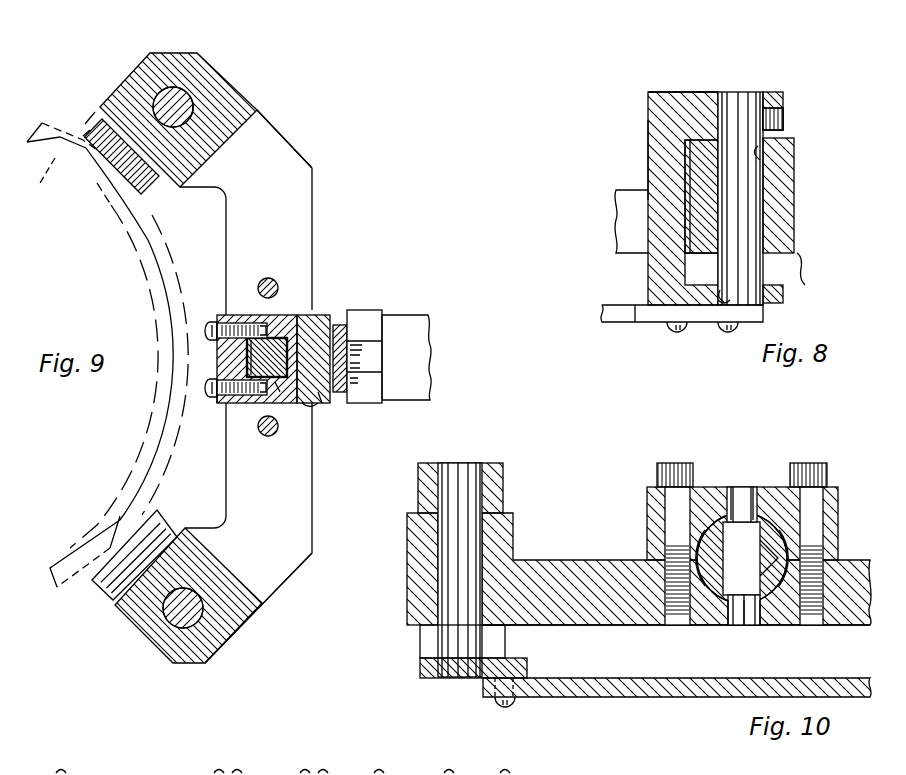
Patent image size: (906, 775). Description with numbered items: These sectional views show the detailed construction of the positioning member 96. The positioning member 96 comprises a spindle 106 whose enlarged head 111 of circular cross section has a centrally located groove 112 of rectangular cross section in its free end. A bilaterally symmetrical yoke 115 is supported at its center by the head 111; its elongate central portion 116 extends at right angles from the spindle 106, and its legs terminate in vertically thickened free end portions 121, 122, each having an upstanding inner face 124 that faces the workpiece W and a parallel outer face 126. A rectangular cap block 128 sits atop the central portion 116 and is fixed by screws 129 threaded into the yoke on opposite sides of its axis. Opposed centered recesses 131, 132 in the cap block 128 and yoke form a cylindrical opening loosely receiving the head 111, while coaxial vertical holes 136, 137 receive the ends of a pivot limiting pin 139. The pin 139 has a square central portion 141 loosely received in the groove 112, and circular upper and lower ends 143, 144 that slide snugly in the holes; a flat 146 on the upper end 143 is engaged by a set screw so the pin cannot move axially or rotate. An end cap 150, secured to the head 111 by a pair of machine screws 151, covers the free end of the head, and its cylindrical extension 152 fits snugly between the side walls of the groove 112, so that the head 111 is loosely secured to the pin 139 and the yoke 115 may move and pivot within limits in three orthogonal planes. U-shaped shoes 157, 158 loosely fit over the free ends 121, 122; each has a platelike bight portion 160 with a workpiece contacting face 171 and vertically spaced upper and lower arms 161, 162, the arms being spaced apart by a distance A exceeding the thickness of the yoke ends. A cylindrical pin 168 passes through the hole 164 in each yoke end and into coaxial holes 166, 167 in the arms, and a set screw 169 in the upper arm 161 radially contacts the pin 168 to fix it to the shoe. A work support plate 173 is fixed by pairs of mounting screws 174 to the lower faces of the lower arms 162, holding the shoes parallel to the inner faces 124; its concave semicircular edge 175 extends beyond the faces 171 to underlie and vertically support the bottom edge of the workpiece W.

In FIG. 9, the positioning member 96 is at (335, 178).
In FIG. 8, the positioning member 96 is at (624, 82).
In FIG. 10, the positioning member 96 is at (590, 470).
In FIG. 9, the spindle 106 is at (334, 318).
In FIG. 9, the head 111 is at (318, 323).
In FIG. 10, the head 111 is at (770, 560).
In FIG. 9, the groove 112 is at (300, 330).
In FIG. 9, the yoke 115 is at (292, 135).
In FIG. 8, the yoke 115 is at (606, 210).
In FIG. 10, the yoke 115 is at (602, 558).
In FIG. 10, the central portion 116 is at (596, 618).
In FIG. 9, the free end portion 121 is at (204, 74).
In FIG. 9, the free end portion 122 is at (233, 622).
In FIG. 10, the free end portion 122 is at (418, 577).
In FIG. 9, the inner face 124 is at (97, 110).
In FIG. 9, the outer face 126 is at (272, 122).
In FIG. 8, the cap block 128 is at (795, 190).
In FIG. 10, the cap block 128 is at (832, 490).
In FIG. 9, the screws 129 is at (268, 278).
In FIG. 10, the screws 129 is at (804, 468).
In FIG. 10, the recess 131 is at (775, 536).
In FIG. 9, the recess 132 is at (321, 394).
In FIG. 10, the recess 132 is at (765, 610).
In FIG. 10, the vertical hole 136 is at (740, 496).
In FIG. 10, the vertical hole 137 is at (726, 620).
In FIG. 9, the pivot limiting pin 139 is at (277, 386).
In FIG. 10, the pivot limiting pin 139 is at (748, 628).
In FIG. 9, the central portion 141 is at (257, 357).
In FIG. 10, the central portion 141 is at (735, 548).
In FIG. 10, the upper end 143 is at (755, 494).
In FIG. 10, the lower end 144 is at (736, 612).
In FIG. 10, the flat 146 is at (736, 492).
In FIG. 9, the end cap 150 is at (230, 397).
In FIG. 9, the machine screws 151 is at (246, 386).
In FIG. 9, the extension 152 is at (252, 365).
In FIG. 9, the shoe 157 is at (88, 133).
In FIG. 9, the shoe 158 is at (98, 590).
In FIG. 8, the shoe 158 is at (680, 85).
In FIG. 10, the shoe 158 is at (418, 664).
In FIG. 9, the bight portion 160 is at (114, 170).
In FIG. 8, the bight portion 160 is at (660, 142).
In FIG. 8, the upper arm 161 is at (664, 100).
In FIG. 10, the upper arm 161 is at (495, 482).
In FIG. 8, the lower arm 162 is at (783, 296).
In FIG. 10, the lower arm 162 is at (434, 677).
In FIG. 9, the hole 164 is at (193, 105).
In FIG. 8, the hole 164 is at (760, 162).
In FIG. 8, the hole 166 is at (722, 108).
In FIG. 8, the hole 167 is at (727, 320).
In FIG. 9, the pin 168 is at (176, 97).
In FIG. 8, the pin 168 is at (752, 212).
In FIG. 10, the pin 168 is at (450, 532).
In FIG. 8, the set screw 169 is at (776, 117).
In FIG. 9, the workpiece contacting face 171 is at (125, 195).
In FIG. 8, the workpiece contacting face 171 is at (649, 170).
In FIG. 9, the work support plate 173 is at (185, 276).
In FIG. 8, the work support plate 173 is at (622, 318).
In FIG. 10, the work support plate 173 is at (680, 690).
In FIG. 8, the mounting screws 174 is at (678, 333).
In FIG. 10, the mounting screws 174 is at (510, 702).
In FIG. 9, the leftward edge 175 is at (170, 315).
In FIG. 8, the distance A is at (806, 269).
In FIG. 9, the workpiece W is at (73, 355).